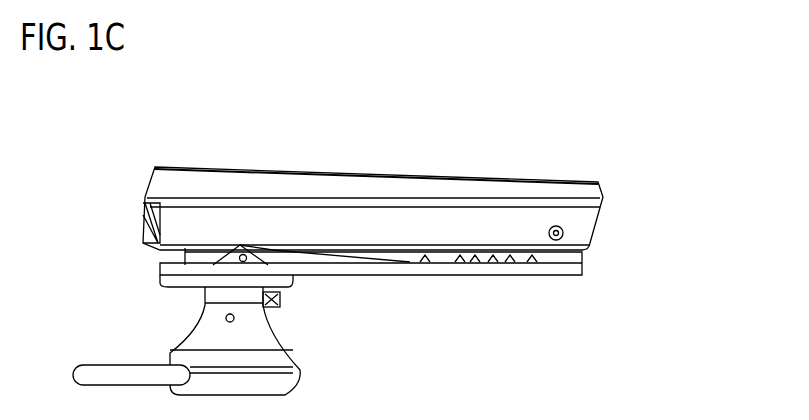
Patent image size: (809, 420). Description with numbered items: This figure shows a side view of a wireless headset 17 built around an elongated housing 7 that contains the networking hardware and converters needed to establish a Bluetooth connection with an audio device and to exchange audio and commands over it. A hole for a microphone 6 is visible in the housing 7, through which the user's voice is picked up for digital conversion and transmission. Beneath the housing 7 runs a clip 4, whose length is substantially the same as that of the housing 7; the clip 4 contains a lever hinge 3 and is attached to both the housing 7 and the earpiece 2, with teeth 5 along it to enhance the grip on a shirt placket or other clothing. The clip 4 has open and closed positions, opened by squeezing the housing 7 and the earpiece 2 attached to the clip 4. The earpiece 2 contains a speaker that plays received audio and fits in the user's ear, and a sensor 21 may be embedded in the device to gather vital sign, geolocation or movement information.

The earpiece 2 is at (250, 323).
The lever hinge 3 is at (243, 243).
The clip 4 is at (403, 277).
The teeth 5 is at (523, 263).
The microphone 6 is at (557, 226).
The housing 7 is at (377, 182).
The wireless headset 17 is at (692, 227).
The sensor 21 is at (218, 342).